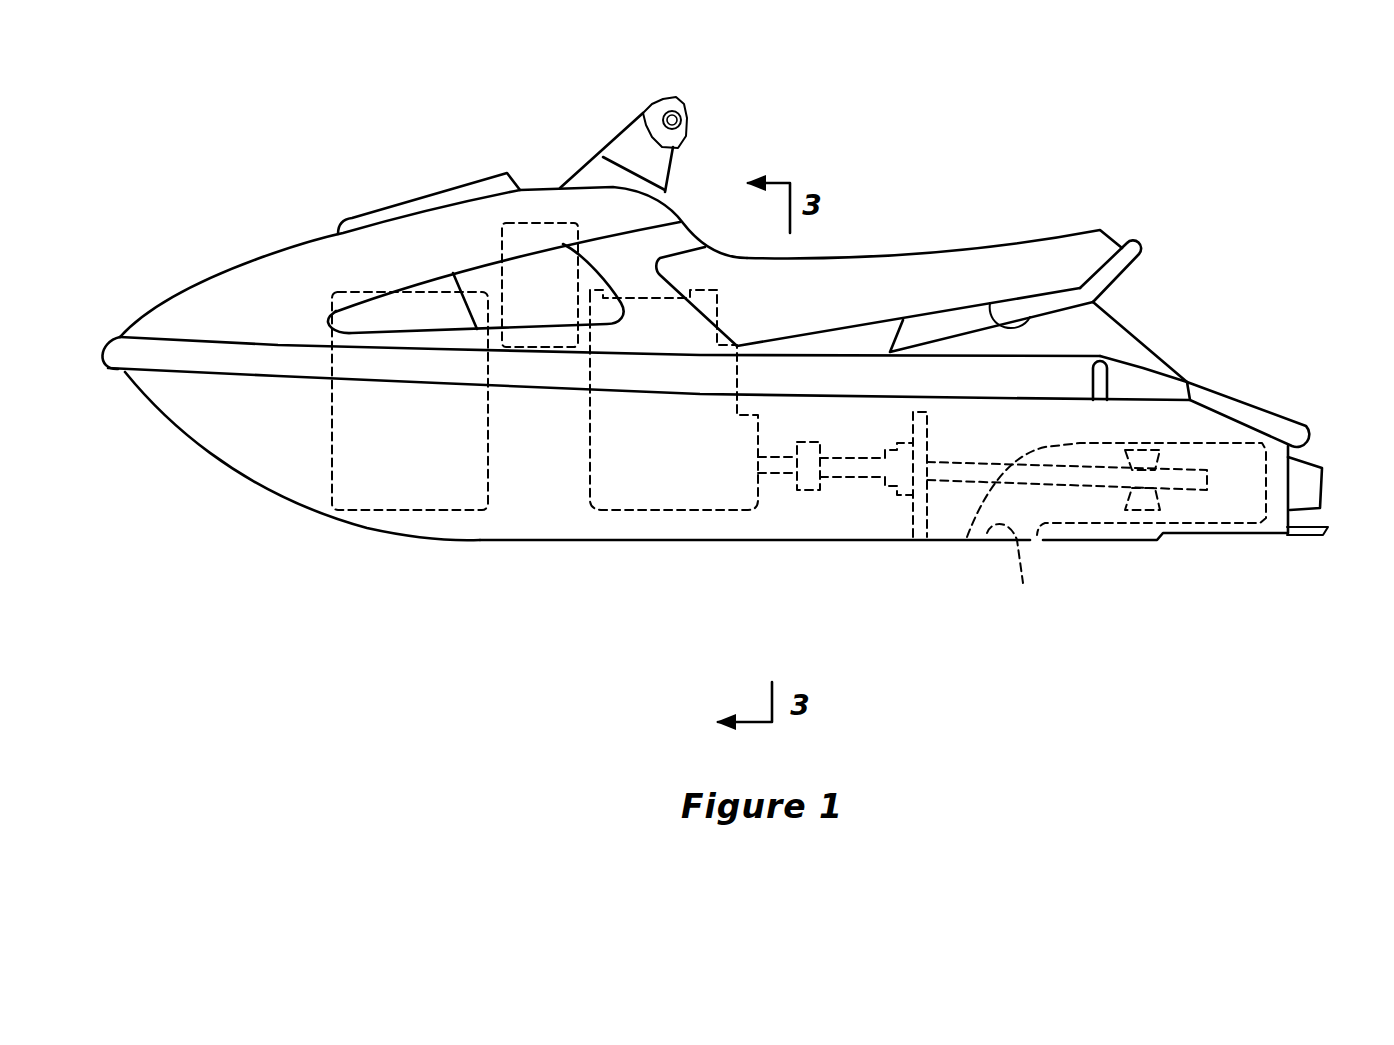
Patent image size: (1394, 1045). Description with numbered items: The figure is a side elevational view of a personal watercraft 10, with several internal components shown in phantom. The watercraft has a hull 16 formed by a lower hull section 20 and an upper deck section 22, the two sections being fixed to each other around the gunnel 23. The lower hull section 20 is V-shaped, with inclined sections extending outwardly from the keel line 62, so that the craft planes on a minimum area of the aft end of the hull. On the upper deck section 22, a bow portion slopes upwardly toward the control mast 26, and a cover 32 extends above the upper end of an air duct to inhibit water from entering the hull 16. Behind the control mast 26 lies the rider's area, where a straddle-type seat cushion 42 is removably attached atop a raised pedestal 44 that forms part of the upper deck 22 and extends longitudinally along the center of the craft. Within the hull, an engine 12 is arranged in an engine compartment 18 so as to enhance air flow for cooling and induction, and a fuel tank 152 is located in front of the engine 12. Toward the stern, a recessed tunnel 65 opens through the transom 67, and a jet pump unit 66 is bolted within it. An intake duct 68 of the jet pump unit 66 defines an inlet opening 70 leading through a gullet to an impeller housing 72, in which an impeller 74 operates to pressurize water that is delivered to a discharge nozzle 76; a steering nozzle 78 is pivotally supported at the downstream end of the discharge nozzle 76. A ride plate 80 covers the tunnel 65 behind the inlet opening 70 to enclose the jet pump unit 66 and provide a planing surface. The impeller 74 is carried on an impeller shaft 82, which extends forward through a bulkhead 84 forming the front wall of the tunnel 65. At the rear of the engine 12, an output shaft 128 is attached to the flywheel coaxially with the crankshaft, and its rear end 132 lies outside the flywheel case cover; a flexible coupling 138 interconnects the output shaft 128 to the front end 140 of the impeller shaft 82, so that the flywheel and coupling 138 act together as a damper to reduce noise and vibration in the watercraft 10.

The personal watercraft 10 is at (1052, 152).
The engine 12 is at (610, 510).
The hull 16 is at (303, 228).
The engine compartment 18 is at (853, 425).
The lower hull section 20 is at (527, 520).
The upper deck section 22 is at (672, 243).
The gunnel 23 is at (197, 362).
The control mast 26 is at (683, 117).
The cover 32 is at (542, 203).
The seat cushion 42 is at (920, 255).
The raised pedestal 44 is at (1117, 338).
The keel line 62 is at (640, 540).
The tunnel 65 is at (987, 427).
The jet pump unit 66 is at (1202, 422).
The transom 67 is at (1293, 467).
The intake duct 68 is at (1040, 450).
The inlet opening 70 is at (1016, 571).
The impeller housing 72 is at (1248, 442).
The impeller 74 is at (1173, 507).
The discharge nozzle 76 is at (1277, 530).
The steering nozzle 78 is at (1325, 495).
The ride plate 80 is at (1107, 542).
The impeller shaft 82 is at (860, 483).
The bulkhead 84 is at (930, 512).
The output shaft 128 is at (770, 452).
The rear end of the output shaft 132 is at (777, 508).
The flexible coupling 138 is at (803, 490).
The front end of the impeller shaft 140 is at (838, 475).
The fuel tank 152 is at (330, 465).